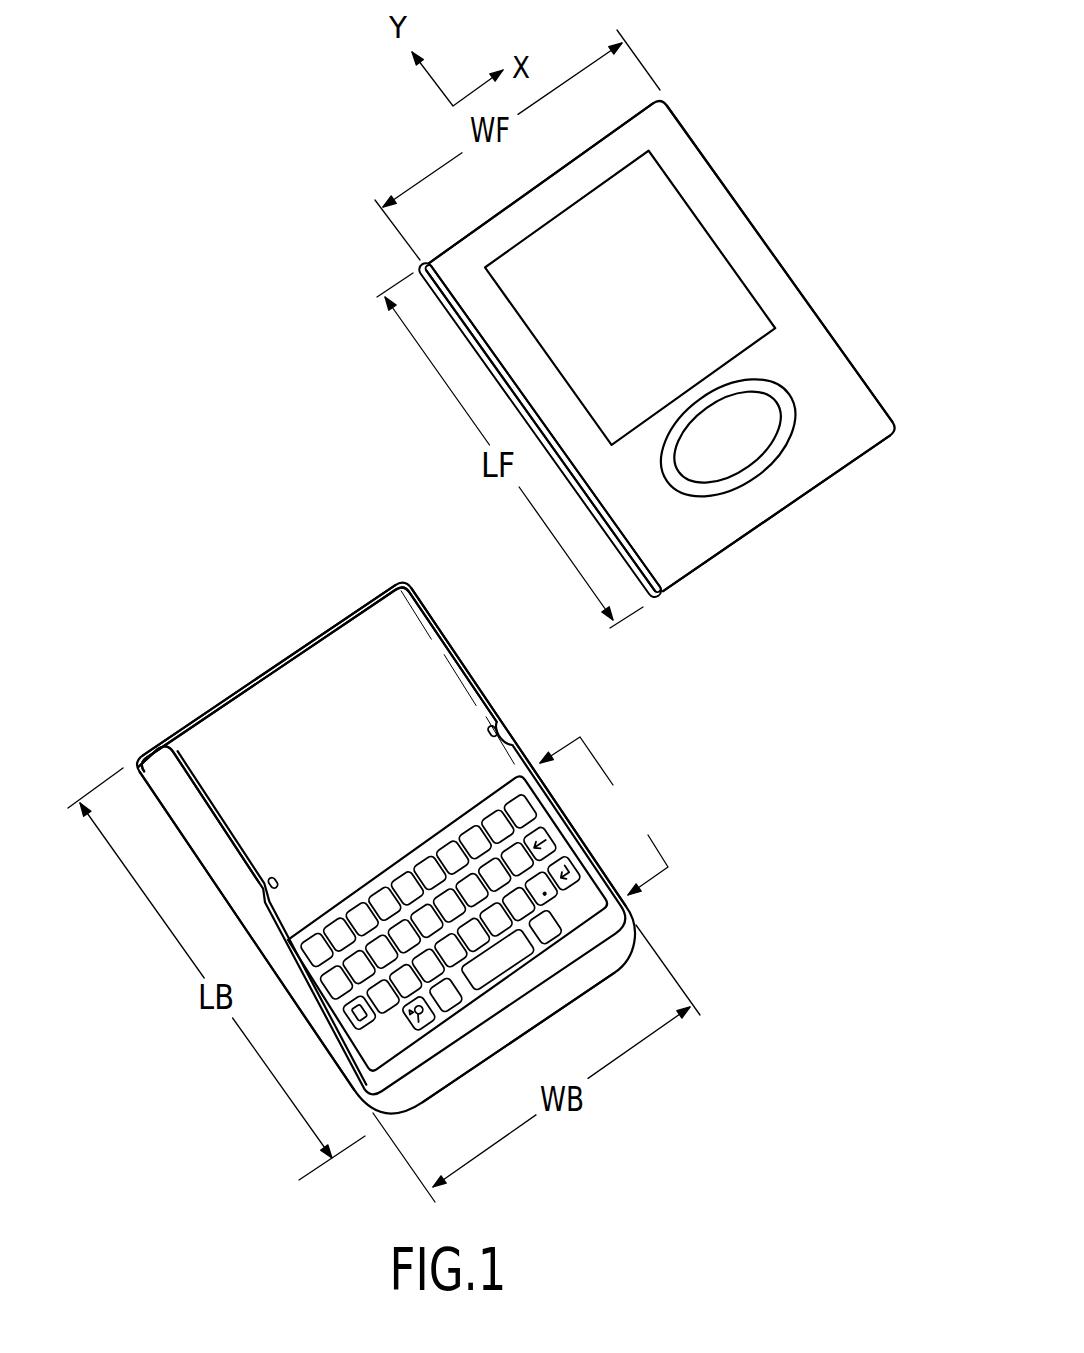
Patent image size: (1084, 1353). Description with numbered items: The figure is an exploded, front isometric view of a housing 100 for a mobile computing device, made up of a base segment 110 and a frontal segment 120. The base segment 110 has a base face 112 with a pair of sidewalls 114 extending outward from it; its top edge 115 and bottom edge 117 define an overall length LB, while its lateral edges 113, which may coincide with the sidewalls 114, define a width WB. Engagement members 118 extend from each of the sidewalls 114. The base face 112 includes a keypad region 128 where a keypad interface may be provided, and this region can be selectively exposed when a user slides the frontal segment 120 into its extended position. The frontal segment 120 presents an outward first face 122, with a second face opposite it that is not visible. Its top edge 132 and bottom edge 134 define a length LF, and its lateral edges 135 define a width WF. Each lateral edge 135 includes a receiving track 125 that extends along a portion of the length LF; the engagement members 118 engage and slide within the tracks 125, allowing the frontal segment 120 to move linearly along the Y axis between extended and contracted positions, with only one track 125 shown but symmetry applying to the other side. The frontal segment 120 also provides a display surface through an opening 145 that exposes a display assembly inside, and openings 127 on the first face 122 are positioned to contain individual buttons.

The housing 100 is at (888, 928).
The base segment 110 is at (226, 1088).
The base face 112 is at (355, 838).
The lateral edges 113 is at (523, 757).
The sidewalls 114 is at (443, 622).
The top edge 115 is at (210, 703).
The bottom edge 117 is at (550, 1010).
The engagement members 118 is at (490, 733).
The frontal segment 120 is at (663, 344).
The first face 122 is at (811, 447).
The receiving track 125 is at (421, 268).
The openings 127 is at (757, 382).
The keypad region 128 is at (604, 816).
The top edge 132 is at (498, 211).
The bottom edge 134 is at (849, 466).
The lateral edges 135 is at (848, 357).
The opening 145 is at (507, 292).